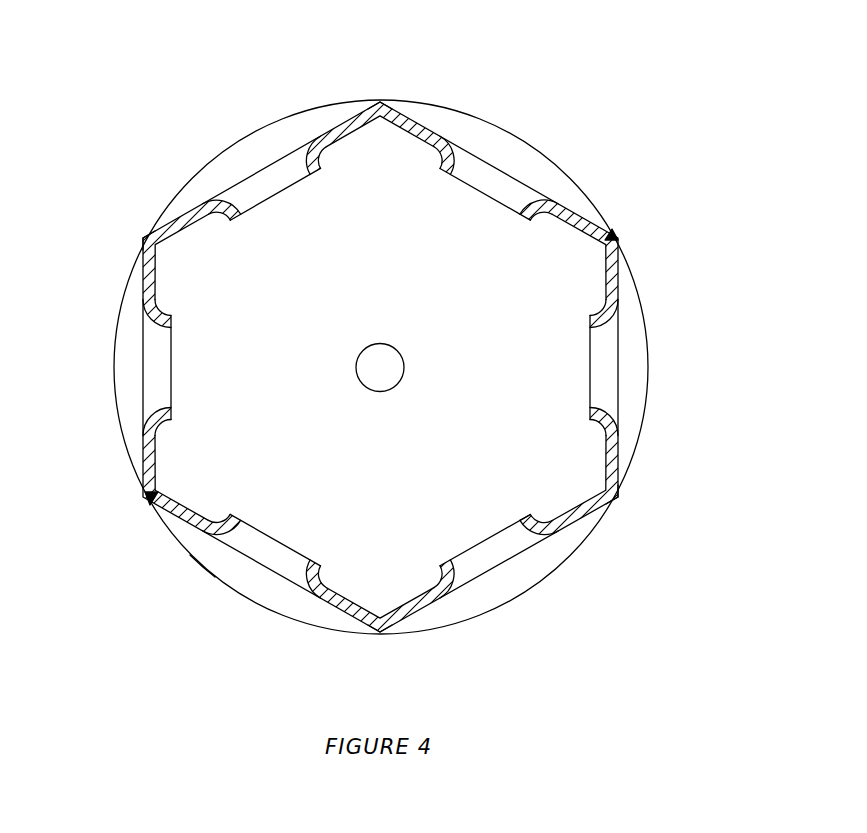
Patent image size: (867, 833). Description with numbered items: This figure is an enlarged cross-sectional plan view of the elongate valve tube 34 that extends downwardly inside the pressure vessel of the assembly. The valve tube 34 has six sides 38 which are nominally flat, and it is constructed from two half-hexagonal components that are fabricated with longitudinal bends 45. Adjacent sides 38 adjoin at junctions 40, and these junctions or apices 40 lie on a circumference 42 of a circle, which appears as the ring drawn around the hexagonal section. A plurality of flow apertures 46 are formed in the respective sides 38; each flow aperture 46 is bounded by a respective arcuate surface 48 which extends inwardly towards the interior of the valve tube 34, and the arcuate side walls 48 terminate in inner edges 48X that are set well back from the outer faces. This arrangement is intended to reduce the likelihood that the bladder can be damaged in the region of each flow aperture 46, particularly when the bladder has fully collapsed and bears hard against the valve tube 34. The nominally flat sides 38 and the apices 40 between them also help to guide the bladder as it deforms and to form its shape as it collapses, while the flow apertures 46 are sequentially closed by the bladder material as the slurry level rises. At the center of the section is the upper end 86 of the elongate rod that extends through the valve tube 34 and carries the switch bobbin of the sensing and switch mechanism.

The valve tube 34 is at (514, 161).
The sides 38 is at (618, 268).
The junctions 40 is at (148, 503).
The circumference 42 is at (198, 566).
The longitudinal bends 45 is at (380, 101).
The flow apertures 46 is at (250, 578).
The arcuate surface 48 is at (548, 538).
The inner edges 48X is at (522, 521).
The upper end 86 is at (405, 369).